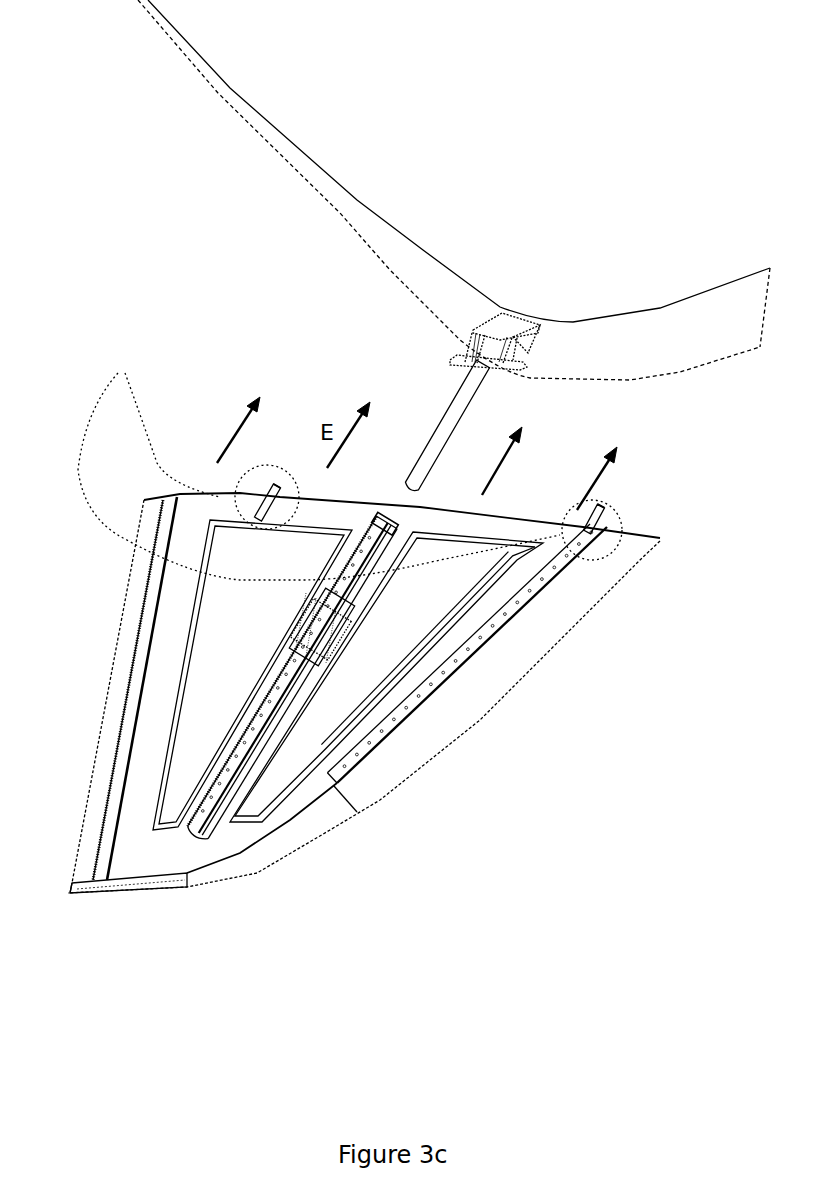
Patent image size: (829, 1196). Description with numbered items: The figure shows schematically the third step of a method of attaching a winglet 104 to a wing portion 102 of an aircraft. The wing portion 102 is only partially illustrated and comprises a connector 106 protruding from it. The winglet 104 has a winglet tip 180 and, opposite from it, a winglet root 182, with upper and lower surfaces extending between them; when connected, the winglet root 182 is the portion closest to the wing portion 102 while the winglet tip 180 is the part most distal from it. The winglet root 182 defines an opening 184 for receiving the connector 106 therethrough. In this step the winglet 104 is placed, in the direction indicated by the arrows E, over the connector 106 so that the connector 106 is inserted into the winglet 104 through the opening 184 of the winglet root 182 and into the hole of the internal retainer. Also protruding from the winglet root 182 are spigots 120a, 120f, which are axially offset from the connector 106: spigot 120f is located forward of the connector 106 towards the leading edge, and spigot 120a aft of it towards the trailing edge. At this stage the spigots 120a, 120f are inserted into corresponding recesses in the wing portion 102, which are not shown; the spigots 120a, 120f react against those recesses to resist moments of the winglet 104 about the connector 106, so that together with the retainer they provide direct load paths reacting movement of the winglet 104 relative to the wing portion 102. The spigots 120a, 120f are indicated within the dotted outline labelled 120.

The wing portion 102 is at (228, 88).
The winglet 104 is at (520, 643).
The connector 106 is at (460, 405).
The sensor flow path 120 is at (319, 464).
The spigot 120a is at (262, 510).
The spigot 120f is at (600, 517).
The winglet tip 180 is at (127, 883).
The winglet root 182 is at (510, 520).
The opening 184 is at (383, 514).